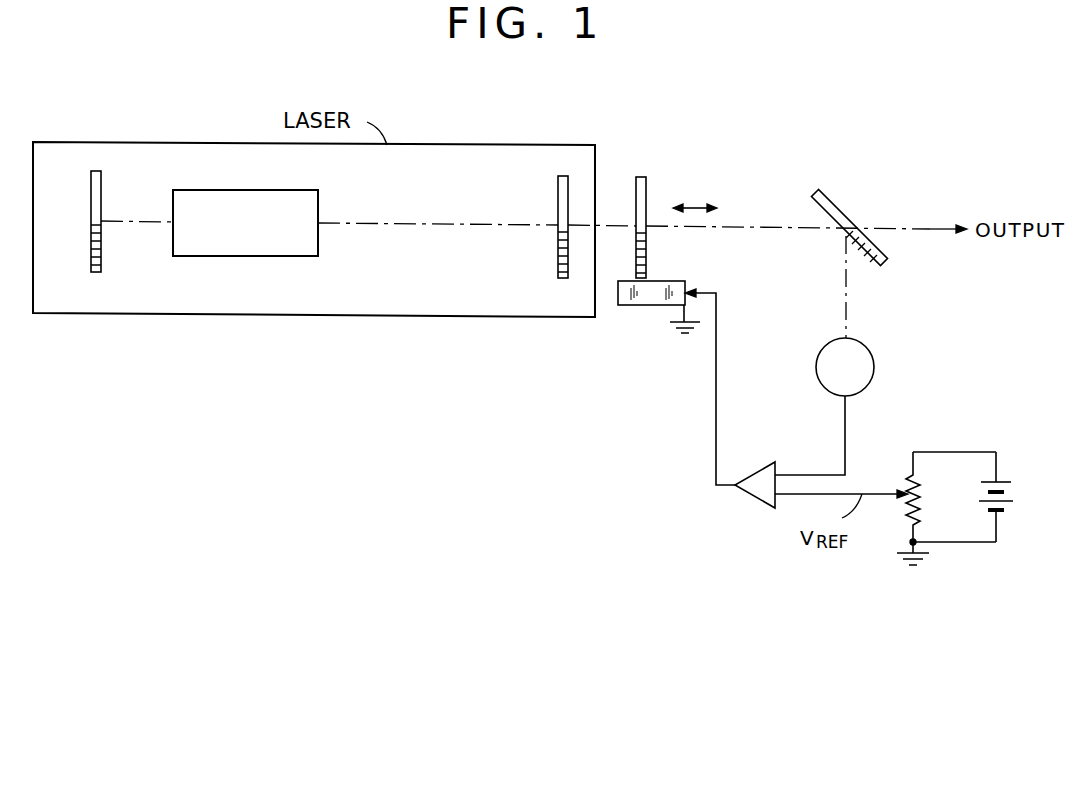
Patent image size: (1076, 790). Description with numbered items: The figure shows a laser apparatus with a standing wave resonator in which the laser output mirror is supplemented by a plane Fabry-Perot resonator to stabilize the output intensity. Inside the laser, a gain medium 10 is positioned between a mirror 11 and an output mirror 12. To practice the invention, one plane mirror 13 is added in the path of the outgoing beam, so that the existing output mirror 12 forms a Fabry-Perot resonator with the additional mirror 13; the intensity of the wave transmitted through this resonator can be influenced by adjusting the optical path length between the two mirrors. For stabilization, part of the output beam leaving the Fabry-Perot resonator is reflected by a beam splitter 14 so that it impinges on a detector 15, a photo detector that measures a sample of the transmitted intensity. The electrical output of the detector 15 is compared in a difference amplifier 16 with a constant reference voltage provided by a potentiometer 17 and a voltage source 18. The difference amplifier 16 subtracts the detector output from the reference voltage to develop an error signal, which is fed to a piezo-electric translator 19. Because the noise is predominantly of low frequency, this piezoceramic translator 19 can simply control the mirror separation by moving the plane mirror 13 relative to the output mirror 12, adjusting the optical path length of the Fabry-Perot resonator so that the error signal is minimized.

The gain medium 10 is at (318, 212).
The mirror 11 is at (91, 236).
The output mirror 12 is at (558, 200).
The plane mirror 13 is at (646, 198).
The beam splitter 14 is at (833, 198).
The detector 15 is at (873, 372).
The difference amplifier 16 is at (751, 470).
The potentiometer 17 is at (910, 480).
The voltage source 18 is at (1010, 482).
The piezo-electric translator 19 is at (672, 281).